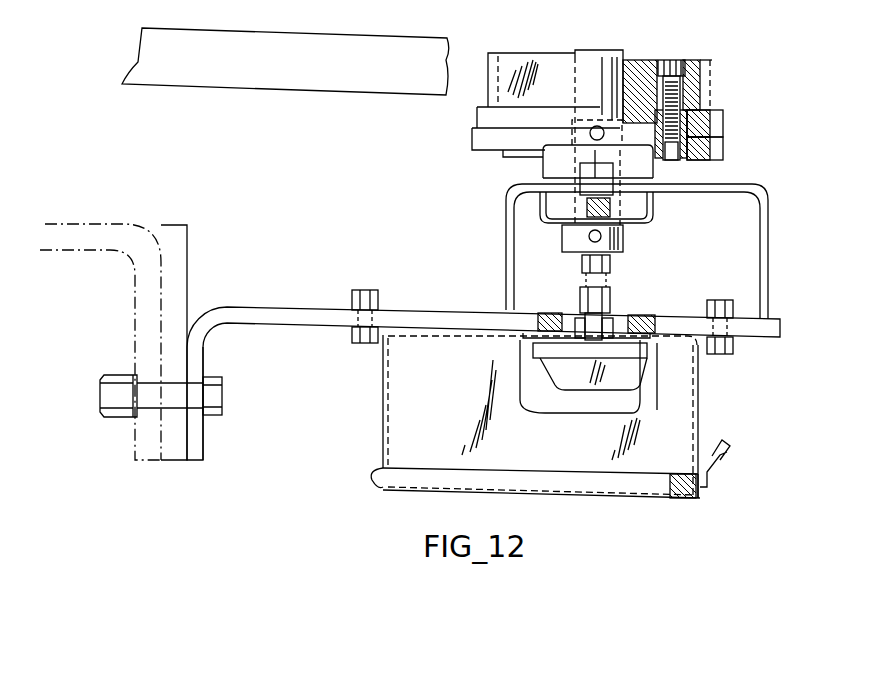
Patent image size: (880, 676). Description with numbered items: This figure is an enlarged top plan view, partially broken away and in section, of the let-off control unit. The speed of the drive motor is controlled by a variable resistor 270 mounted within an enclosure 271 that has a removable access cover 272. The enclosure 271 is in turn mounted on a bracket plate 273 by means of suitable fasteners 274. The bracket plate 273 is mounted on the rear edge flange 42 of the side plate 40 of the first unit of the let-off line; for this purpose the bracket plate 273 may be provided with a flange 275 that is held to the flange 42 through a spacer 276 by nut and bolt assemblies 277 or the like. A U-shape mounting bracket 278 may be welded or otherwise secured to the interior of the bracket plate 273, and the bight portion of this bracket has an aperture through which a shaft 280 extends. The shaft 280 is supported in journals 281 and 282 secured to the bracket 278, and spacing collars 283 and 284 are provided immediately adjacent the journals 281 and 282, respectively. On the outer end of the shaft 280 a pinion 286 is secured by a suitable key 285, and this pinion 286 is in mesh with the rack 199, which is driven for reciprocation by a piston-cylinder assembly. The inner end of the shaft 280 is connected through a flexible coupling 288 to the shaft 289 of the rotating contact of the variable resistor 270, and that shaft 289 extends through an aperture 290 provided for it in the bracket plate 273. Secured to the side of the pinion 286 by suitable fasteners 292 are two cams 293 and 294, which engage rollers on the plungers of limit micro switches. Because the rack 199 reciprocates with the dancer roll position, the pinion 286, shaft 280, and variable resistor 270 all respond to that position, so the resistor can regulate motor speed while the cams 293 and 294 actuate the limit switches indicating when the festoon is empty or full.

The side plate 40 is at (62, 254).
The rear edge flange 42 is at (134, 342).
The rack 199 is at (288, 75).
The variable resistor 270 is at (598, 383).
The enclosure 271 is at (699, 398).
The removable access cover 272 is at (655, 494).
The bracket plate 273 is at (297, 317).
The fasteners 274 is at (370, 290).
The flange 275 is at (203, 441).
The spacer 276 is at (178, 461).
The nut and bolt assemblies 277 is at (222, 394).
The U-shape mounting bracket 278 is at (770, 232).
The shaft 280 is at (612, 52).
The journal 281 is at (545, 172).
The journal 282 is at (552, 208).
The spacing collar 283 is at (612, 122).
The spacing collar 284 is at (624, 241).
The key 285 is at (642, 72).
The pinion 286 is at (540, 66).
The flexible coupling 288 is at (611, 290).
The shaft of the rotating contact 289 is at (572, 320).
The aperture 290 is at (622, 318).
The fasteners 292 is at (690, 62).
The cam 293 is at (720, 126).
The cam 294 is at (722, 150).